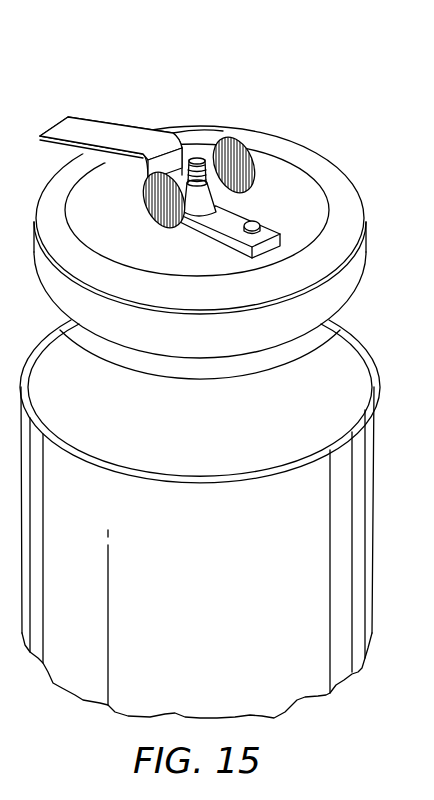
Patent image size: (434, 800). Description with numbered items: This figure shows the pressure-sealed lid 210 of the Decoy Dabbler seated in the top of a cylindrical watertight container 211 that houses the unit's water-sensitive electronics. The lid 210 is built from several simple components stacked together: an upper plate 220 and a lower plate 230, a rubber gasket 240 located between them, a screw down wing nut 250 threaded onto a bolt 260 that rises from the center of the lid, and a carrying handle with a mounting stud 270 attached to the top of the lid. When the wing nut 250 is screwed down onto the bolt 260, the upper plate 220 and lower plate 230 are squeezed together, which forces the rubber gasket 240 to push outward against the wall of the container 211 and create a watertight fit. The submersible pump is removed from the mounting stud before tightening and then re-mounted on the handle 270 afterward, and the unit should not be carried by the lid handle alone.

The pressure-sealed lid 210 is at (127, 78).
The container 211 is at (218, 603).
The upper plate 220 is at (320, 162).
The lower plate 230 is at (163, 358).
The rubber gasket 240 is at (249, 336).
The screw down wing nut 250 is at (248, 178).
The bolt 260 is at (196, 160).
The carrying handle with a mounting stud 270 is at (57, 125).